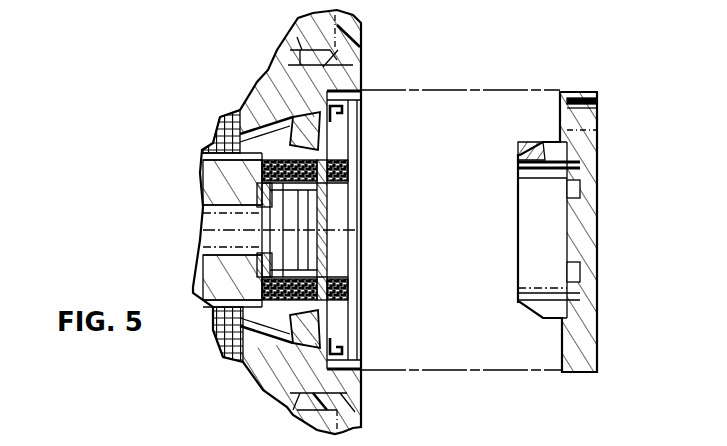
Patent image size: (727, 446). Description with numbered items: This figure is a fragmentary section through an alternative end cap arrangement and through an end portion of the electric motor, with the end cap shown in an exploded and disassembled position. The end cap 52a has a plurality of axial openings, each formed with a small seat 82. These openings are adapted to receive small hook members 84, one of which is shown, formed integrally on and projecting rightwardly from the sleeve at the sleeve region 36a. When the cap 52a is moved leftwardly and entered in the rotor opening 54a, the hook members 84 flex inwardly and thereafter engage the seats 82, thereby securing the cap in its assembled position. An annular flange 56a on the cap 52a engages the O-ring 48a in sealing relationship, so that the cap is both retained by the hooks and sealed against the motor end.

The housing seal/packing region 36a is at (206, 131).
The hook member 84 is at (342, 106).
The O-ring 48a is at (323, 153).
The seat 82 is at (576, 113).
The annular flange 56a is at (538, 164).
The end cap 52a is at (592, 203).
The rotor opening 54a is at (344, 374).